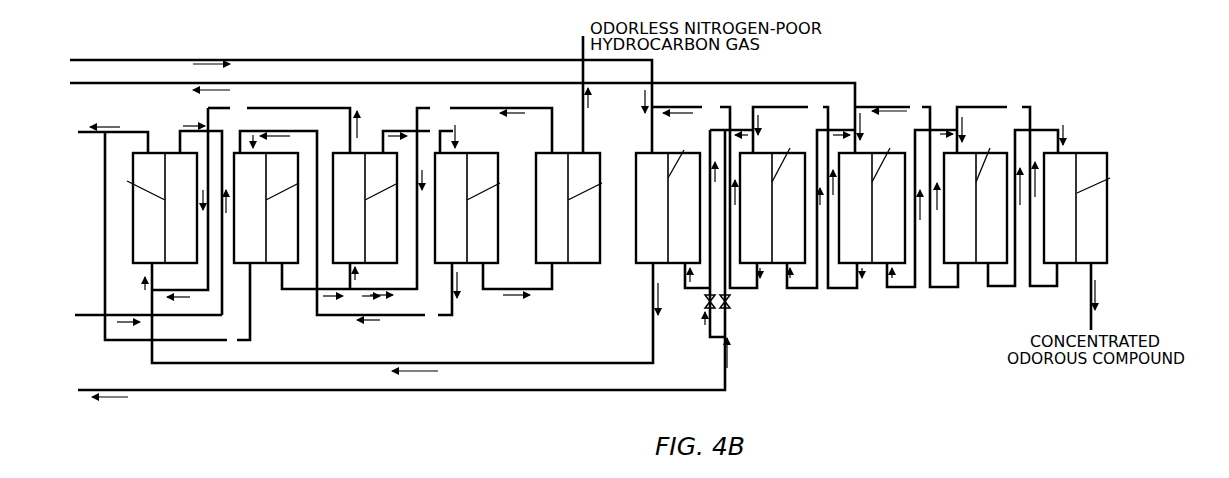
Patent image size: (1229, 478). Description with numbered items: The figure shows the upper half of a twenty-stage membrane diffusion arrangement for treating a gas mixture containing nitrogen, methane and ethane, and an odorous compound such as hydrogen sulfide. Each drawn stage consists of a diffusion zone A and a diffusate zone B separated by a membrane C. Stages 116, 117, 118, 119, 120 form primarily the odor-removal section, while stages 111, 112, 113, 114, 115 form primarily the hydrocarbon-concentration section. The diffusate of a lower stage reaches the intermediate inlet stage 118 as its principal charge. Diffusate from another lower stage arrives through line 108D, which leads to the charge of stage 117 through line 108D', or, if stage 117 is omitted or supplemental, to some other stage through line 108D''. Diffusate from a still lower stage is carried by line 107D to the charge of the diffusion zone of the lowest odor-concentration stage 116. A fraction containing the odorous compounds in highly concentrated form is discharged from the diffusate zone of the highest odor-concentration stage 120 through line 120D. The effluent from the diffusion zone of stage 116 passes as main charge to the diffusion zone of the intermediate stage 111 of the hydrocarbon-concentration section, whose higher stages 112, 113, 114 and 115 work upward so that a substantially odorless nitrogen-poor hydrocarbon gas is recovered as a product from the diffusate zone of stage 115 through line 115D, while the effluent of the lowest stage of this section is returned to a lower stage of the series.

The diffusate line from stage 107 107D is at (345, 58).
The diffusate product line from stage 115 115D is at (581, 48).
The diffusate line from stage 108 108D is at (401, 273).
The branch diffusate line to stage 117 108D' is at (754, 325).
The alternate branch diffusate line 108D'' is at (697, 245).
The odorous concentrate discharge line 120D is at (1090, 308).
The intermediate stage of hydrocarbon-concentration section 111 is at (178, 265).
The separation stage 112 is at (293, 265).
The separation stage 113 is at (390, 265).
The separation stage 114 is at (498, 264).
The highest stage of hydrocarbon-concentration section 115 is at (597, 265).
The lowest stage of odor-concentration section 116 is at (636, 265).
The separation stage 117 is at (782, 264).
The intermediate inlet stage of odor-concentration section 118 is at (883, 264).
The separation stage 119 is at (983, 264).
The highest stage of odor-concentration section 120 is at (1104, 264).